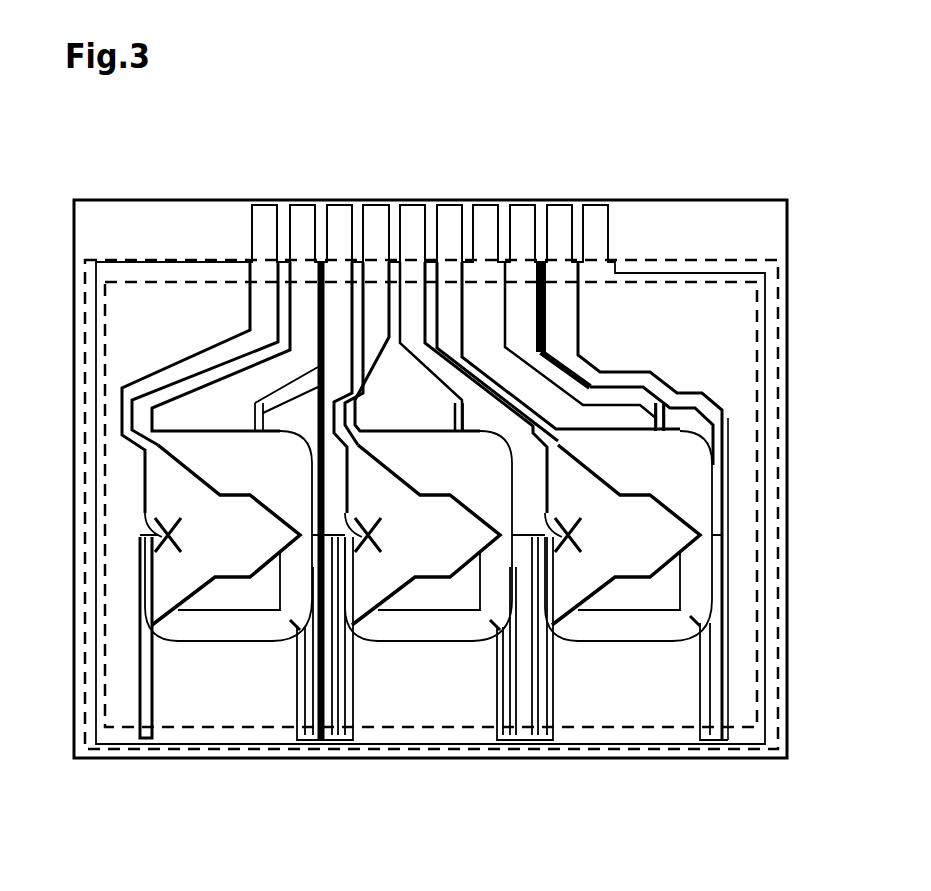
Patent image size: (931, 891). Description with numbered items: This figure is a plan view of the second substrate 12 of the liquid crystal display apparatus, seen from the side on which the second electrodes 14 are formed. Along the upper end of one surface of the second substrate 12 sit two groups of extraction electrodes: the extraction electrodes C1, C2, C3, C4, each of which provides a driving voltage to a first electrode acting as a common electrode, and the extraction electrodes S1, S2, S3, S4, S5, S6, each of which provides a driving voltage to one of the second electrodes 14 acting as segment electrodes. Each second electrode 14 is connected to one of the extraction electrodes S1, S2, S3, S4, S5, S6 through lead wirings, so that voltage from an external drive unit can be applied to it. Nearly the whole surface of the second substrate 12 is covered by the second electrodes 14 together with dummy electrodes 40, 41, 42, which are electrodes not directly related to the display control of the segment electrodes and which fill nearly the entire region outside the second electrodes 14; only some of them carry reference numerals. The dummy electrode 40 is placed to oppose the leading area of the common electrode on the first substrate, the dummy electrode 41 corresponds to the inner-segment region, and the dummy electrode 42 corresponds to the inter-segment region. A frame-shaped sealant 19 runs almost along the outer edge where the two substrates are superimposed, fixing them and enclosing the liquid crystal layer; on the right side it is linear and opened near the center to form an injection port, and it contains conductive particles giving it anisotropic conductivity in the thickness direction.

The second substrate 12 is at (740, 199).
The second electrode 14 is at (172, 592).
The sealant 19 is at (616, 260).
The dummy electrode 40 is at (572, 308).
The dummy electrode 41 is at (650, 597).
The dummy electrode 42 is at (532, 480).
The extraction electrode S1 is at (265, 213).
The extraction electrode S2 is at (304, 213).
The extraction electrode S3 is at (341, 213).
The extraction electrode S4 is at (377, 213).
The extraction electrode S5 is at (413, 213).
The extraction electrode S6 is at (448, 213).
The extraction electrode C1 is at (485, 213).
The extraction electrode C2 is at (522, 213).
The extraction electrode C3 is at (558, 213).
The extraction electrode C4 is at (595, 213).